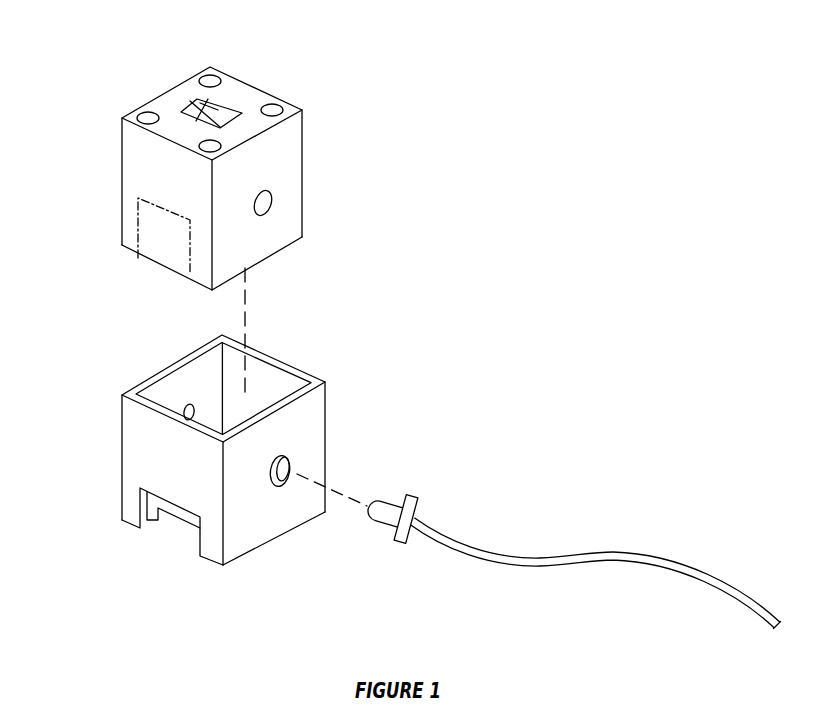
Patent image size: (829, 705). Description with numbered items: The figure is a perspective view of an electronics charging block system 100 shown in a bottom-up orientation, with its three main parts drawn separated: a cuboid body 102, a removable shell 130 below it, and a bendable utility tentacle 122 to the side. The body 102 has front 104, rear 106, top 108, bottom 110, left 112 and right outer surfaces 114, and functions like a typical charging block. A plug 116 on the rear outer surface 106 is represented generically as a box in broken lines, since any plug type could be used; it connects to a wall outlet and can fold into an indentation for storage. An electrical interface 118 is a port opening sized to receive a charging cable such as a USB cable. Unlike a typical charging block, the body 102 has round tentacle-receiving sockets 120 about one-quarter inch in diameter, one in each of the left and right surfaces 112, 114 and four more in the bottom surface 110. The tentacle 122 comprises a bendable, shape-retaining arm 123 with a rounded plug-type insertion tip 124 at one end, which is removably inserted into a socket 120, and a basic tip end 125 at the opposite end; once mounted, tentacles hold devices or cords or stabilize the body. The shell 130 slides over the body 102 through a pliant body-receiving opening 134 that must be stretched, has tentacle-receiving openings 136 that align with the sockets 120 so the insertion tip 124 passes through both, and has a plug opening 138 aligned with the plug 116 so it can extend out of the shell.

The electronics charging block system 100 is at (458, 267).
The body 102 is at (305, 150).
The front outer surface 104 is at (273, 104).
The rear outer surface 106 is at (143, 182).
The top outer surface 108 is at (263, 258).
The bottom outer surface 110 is at (170, 107).
The left outer surface 112 is at (287, 227).
The right outer surface 114 is at (122, 150).
The plug 116 is at (173, 253).
The electrical interface 118 is at (203, 109).
The tentacle-receiving socket 120 is at (272, 104).
The bendable utility tentacle 122 is at (692, 555).
The bendable arm 123 is at (565, 558).
The insertion tip 124 is at (418, 507).
The tip end 125 is at (780, 622).
The removable shell 130 is at (332, 430).
The body-receiving opening 134 is at (158, 388).
The tentacle-receiving opening 136 is at (189, 404).
The plug opening 138 is at (170, 530).